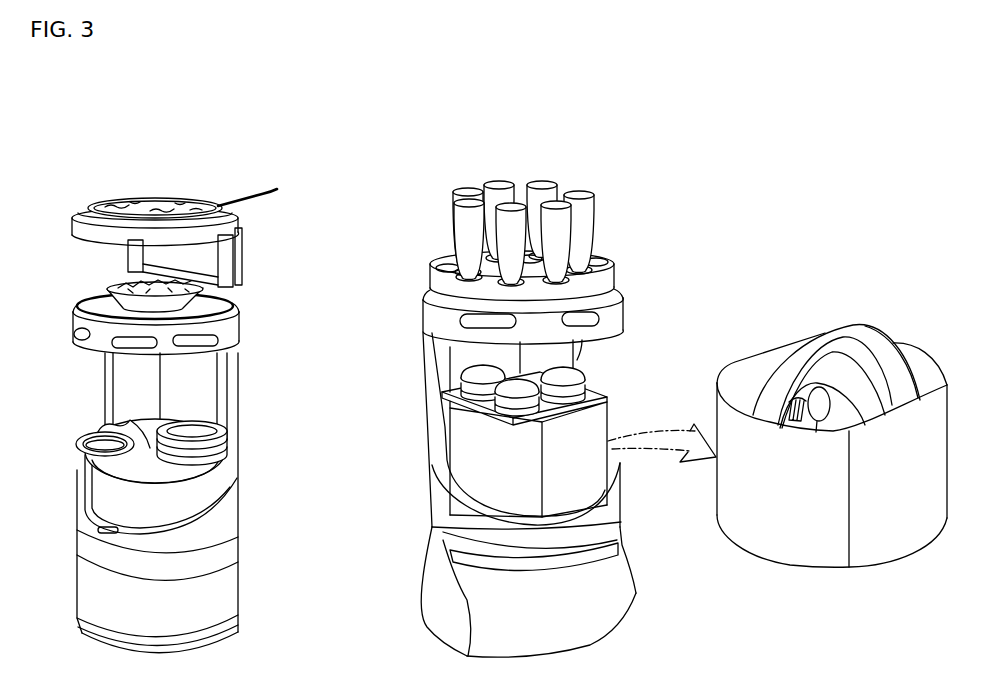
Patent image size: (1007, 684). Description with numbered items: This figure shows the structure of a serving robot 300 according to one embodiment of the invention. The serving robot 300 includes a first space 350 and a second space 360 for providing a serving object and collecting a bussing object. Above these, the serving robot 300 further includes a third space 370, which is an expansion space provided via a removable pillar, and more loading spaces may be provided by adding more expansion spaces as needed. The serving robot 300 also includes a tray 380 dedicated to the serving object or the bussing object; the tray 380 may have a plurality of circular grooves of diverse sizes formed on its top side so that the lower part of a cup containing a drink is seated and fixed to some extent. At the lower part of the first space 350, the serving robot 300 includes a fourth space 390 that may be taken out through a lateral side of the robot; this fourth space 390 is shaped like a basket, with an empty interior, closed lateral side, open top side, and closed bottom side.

The serving robot 300 is at (86, 101).
The first space 350 is at (217, 466).
The second space 360 is at (237, 329).
The third space 370 is at (236, 226).
The tray 380 is at (447, 278).
The fourth space 390 is at (467, 460).